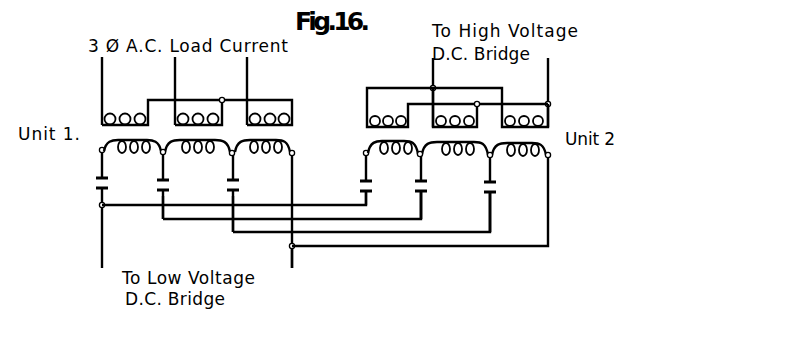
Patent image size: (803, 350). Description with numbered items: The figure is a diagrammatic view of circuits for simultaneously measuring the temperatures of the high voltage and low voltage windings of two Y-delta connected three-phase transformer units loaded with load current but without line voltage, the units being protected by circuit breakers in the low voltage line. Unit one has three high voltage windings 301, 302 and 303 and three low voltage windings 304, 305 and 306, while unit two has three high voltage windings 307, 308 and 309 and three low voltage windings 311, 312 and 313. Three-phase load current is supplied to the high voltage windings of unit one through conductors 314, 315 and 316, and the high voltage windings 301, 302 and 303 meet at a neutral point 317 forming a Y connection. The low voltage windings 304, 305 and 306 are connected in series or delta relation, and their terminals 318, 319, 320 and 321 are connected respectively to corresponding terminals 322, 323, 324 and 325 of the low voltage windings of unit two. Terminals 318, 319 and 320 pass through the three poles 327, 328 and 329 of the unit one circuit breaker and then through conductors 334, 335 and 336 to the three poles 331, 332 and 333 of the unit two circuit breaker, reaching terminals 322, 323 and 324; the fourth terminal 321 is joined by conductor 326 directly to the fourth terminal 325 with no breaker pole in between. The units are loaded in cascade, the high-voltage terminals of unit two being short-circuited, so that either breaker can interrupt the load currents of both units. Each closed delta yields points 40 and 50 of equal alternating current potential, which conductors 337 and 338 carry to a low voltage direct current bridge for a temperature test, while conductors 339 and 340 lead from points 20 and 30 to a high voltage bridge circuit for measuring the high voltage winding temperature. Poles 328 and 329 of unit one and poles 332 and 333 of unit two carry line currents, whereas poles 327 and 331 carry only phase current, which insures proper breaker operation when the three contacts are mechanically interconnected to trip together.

The conductor 314 is at (102, 70).
The conductor 315 is at (175, 70).
The conductor 316 is at (247, 73).
The high voltage winding 301 is at (142, 107).
The high voltage winding 302 is at (184, 126).
The high voltage winding 303 is at (259, 126).
The neutral point 317 is at (221, 99).
The low voltage winding 304 is at (132, 161).
The low voltage winding 305 is at (197, 159).
The low voltage winding 306 is at (277, 155).
The terminal 318 is at (100, 151).
The terminal 319 is at (142, 184).
The terminal 320 is at (209, 191).
The fourth terminal 321 is at (293, 152).
The circuit breaker pole 327 is at (96, 185).
The point of equal alternating current potential 40 is at (104, 207).
The circuit breaker pole 328 is at (161, 198).
The circuit breaker pole 329 is at (231, 198).
The conductor 337 is at (102, 250).
The point of equal alternating current potential 50 is at (289, 246).
The conductor 338 is at (292, 257).
The conductor 334 is at (312, 204).
The conductor 335 is at (368, 218).
The conductor 336 is at (431, 233).
The conductor 326 is at (443, 247).
The conductor 339 is at (433, 70).
The conductor 340 is at (548, 79).
The point 20 is at (435, 87).
The point 30 is at (546, 102).
The high voltage winding 307 is at (395, 109).
The high voltage winding 308 is at (447, 127).
The high voltage winding 309 is at (513, 127).
The terminal 322 is at (364, 154).
The low voltage winding 311 is at (400, 156).
The low voltage winding 312 is at (465, 156).
The low voltage winding 313 is at (532, 156).
The fourth terminal 325 is at (550, 157).
The circuit breaker pole 331 is at (372, 190).
The terminal 323 is at (427, 190).
The circuit breaker pole 332 is at (424, 195).
The terminal 324 is at (496, 190).
The circuit breaker pole 333 is at (493, 196).